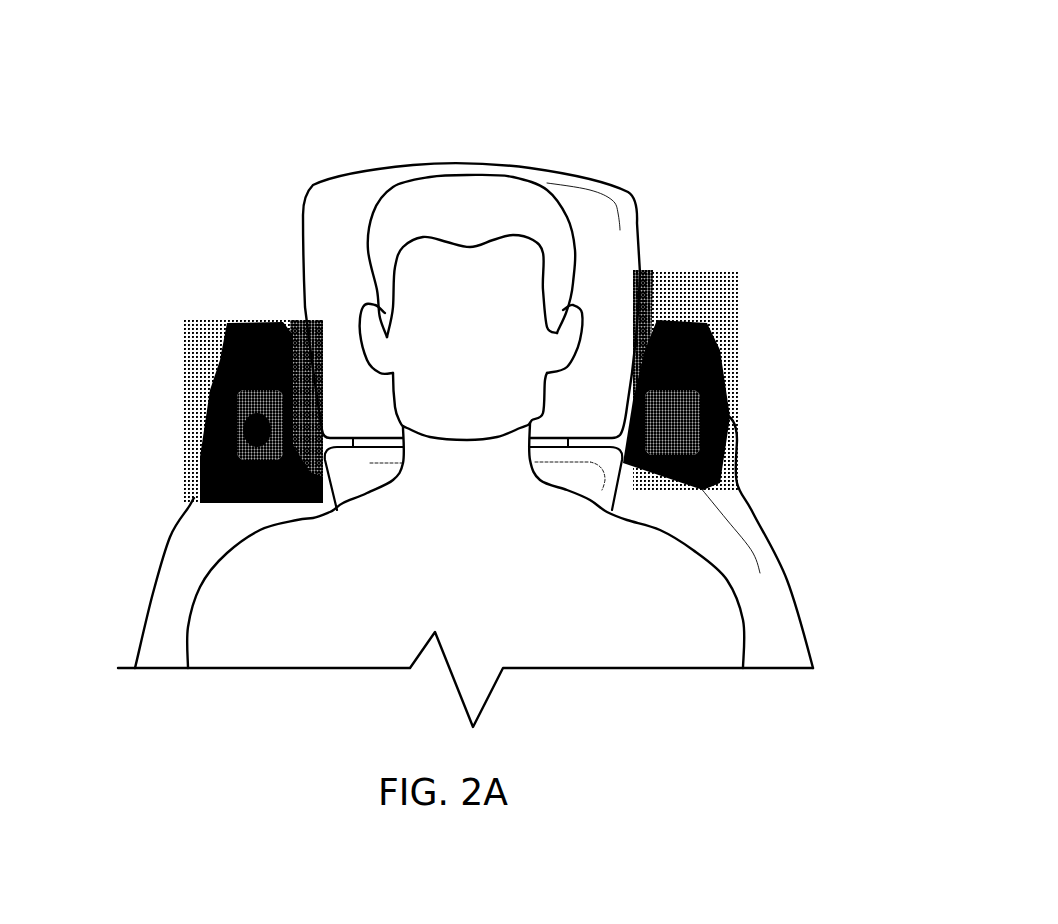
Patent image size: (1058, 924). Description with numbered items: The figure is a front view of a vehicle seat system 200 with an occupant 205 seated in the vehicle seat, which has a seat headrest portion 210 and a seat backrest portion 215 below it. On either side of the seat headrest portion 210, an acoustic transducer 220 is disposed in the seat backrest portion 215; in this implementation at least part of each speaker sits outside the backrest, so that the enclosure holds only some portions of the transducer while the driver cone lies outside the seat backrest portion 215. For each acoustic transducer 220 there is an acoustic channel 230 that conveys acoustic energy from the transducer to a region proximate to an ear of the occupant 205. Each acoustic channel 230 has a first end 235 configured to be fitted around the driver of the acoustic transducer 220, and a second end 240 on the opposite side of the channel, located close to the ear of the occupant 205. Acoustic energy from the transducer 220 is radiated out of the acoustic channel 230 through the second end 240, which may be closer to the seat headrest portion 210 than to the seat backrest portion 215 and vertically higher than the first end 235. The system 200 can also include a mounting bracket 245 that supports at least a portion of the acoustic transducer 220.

The vehicle seat system 200 is at (287, 46).
The occupant 205 is at (565, 257).
The seat headrest portion 210 is at (640, 277).
The seat backrest portion 215 is at (807, 630).
The acoustic transducer 220 is at (260, 410).
The acoustic channel 230 is at (233, 457).
The first end 235 is at (210, 420).
The second end 240 is at (247, 327).
The mounting bracket 245 is at (742, 443).